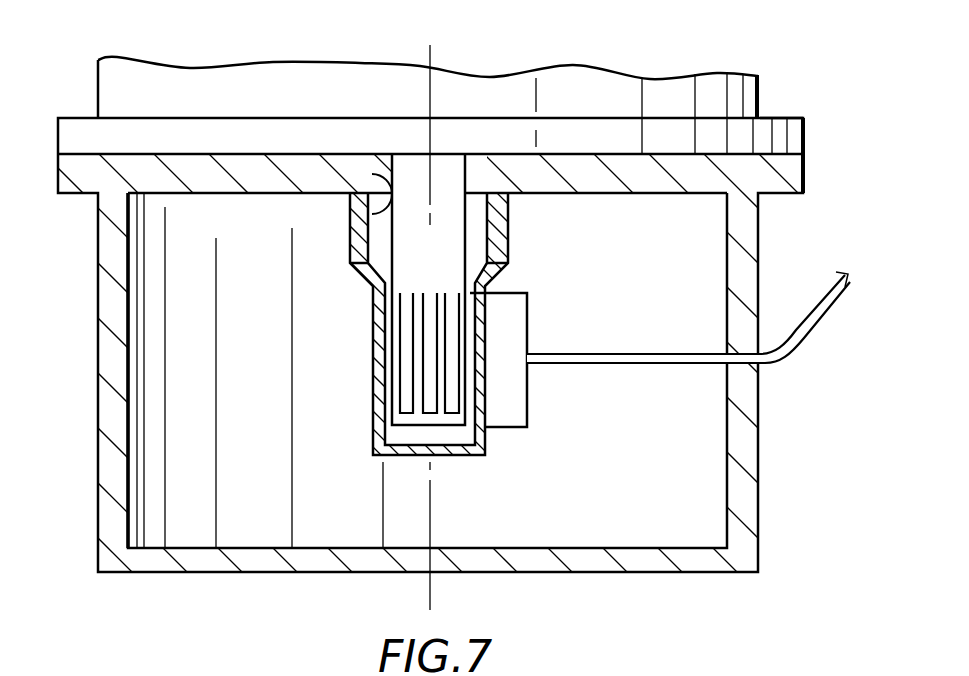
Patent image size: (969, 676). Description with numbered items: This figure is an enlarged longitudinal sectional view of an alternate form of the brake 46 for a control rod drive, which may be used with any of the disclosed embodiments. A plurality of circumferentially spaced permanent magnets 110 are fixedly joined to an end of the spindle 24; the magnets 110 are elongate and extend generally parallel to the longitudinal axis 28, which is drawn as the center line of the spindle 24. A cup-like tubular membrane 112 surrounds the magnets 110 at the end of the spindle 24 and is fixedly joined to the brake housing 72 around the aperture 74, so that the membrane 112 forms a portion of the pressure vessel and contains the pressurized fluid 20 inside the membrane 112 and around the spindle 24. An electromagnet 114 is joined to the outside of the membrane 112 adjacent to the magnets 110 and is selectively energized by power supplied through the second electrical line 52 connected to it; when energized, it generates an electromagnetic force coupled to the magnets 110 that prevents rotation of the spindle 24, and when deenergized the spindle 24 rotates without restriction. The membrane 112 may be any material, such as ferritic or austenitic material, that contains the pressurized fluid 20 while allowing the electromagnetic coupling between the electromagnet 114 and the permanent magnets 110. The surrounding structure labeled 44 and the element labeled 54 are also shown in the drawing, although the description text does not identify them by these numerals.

The pressurized fluid 20 is at (383, 247).
The spindle 24 is at (474, 168).
The longitudinal axis 28 is at (430, 62).
The plate 44 is at (645, 76).
The brake 46 is at (95, 462).
The second electrical line 52 is at (790, 333).
The ring 54 is at (760, 95).
The brake housing 72 is at (758, 250).
The aperture 74 is at (365, 208).
The permanent magnets 110 is at (437, 293).
The tubular membrane 112 is at (510, 229).
The electromagnet 114 is at (528, 318).